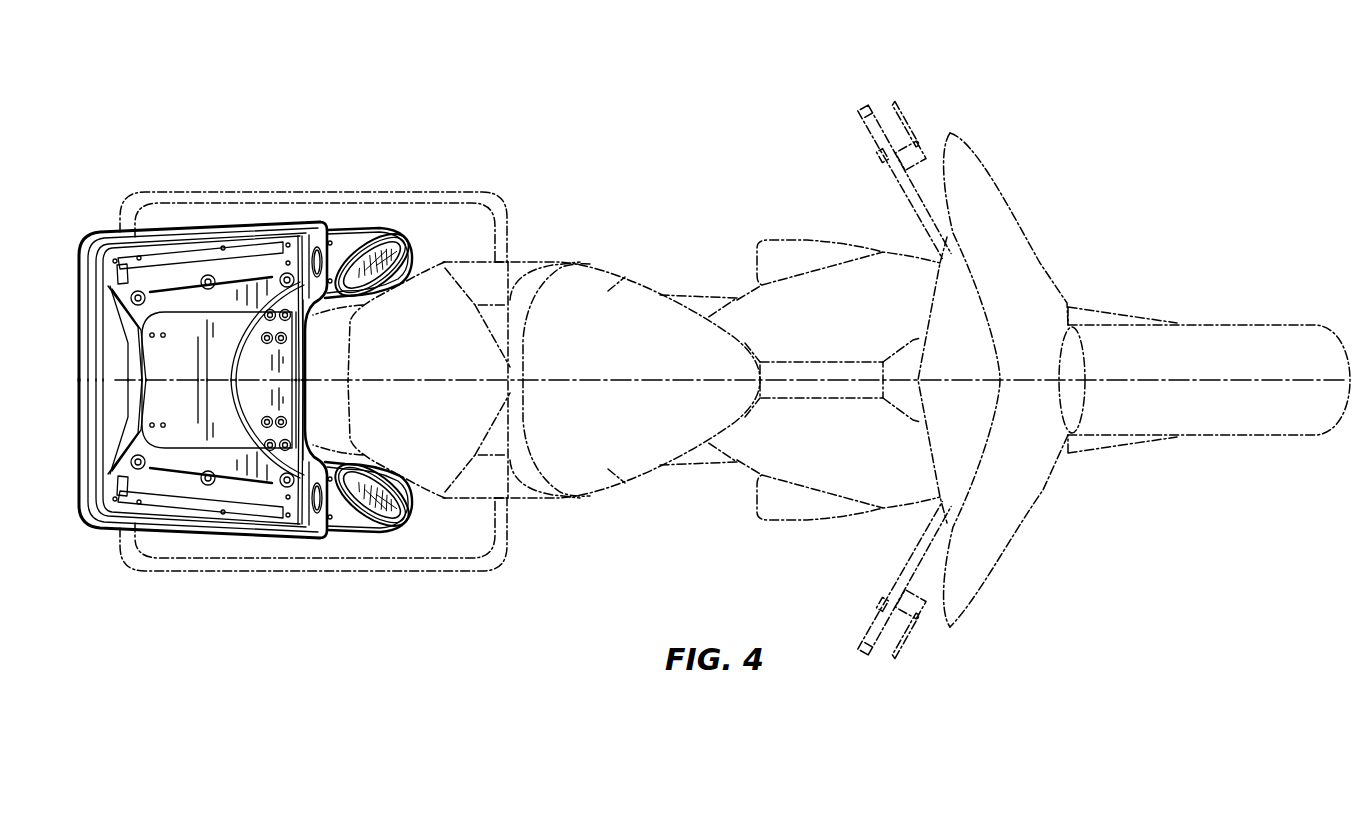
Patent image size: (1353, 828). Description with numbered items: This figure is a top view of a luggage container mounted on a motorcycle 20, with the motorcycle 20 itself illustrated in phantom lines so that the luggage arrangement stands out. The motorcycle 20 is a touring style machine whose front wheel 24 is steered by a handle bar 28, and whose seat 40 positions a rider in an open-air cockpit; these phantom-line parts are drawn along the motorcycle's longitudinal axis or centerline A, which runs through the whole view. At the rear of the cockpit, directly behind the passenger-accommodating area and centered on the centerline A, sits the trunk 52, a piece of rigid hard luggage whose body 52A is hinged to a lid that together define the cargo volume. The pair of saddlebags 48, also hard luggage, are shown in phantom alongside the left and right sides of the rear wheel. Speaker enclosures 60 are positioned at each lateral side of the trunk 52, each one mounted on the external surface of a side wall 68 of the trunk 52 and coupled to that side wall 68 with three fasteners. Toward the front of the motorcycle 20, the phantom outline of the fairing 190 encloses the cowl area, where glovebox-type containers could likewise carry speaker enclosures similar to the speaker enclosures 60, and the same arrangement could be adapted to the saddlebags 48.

The motorcycle 20 is at (1090, 131).
The front wheel 24 is at (1287, 323).
The handle bar 28 is at (925, 223).
The seat 40 is at (625, 277).
The saddlebags 48 is at (450, 226).
The trunk 52 is at (186, 510).
The body 52A is at (203, 380).
The speaker enclosures 60 is at (357, 236).
The side wall 68 is at (310, 358).
The fairing 190 is at (1030, 283).
The longitudinal axis A is at (1195, 382).